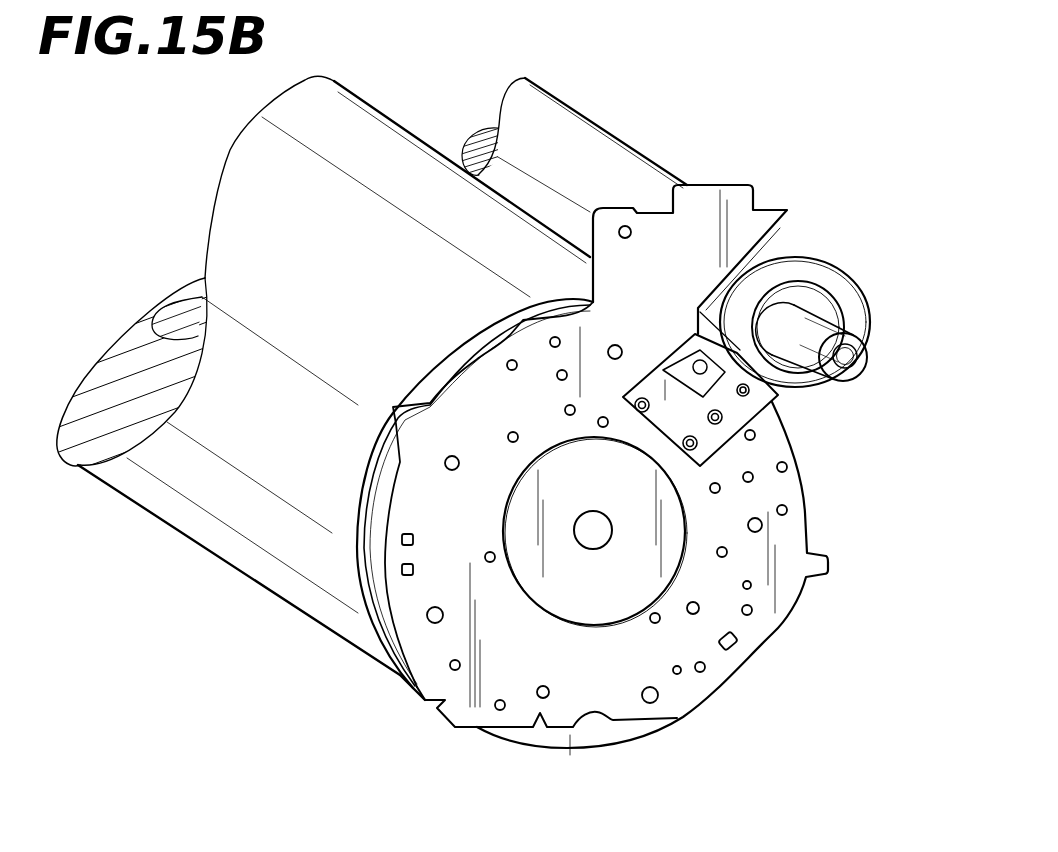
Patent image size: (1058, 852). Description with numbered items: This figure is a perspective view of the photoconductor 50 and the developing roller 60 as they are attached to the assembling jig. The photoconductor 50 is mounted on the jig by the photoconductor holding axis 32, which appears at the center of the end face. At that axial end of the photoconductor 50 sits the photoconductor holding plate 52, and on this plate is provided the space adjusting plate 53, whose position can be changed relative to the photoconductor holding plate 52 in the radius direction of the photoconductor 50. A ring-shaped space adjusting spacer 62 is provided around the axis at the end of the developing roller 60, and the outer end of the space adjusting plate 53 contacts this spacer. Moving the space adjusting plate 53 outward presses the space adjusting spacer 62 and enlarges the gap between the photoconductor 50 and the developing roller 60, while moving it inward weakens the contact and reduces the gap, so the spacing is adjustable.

The photoconductor 50 is at (280, 540).
The developing roller 60 is at (608, 160).
The space adjusting spacer 62 is at (838, 288).
The space adjusting plate 53 is at (743, 410).
The photoconductor holding plate 52 is at (782, 600).
The photoconductor holding axis 32 is at (596, 533).